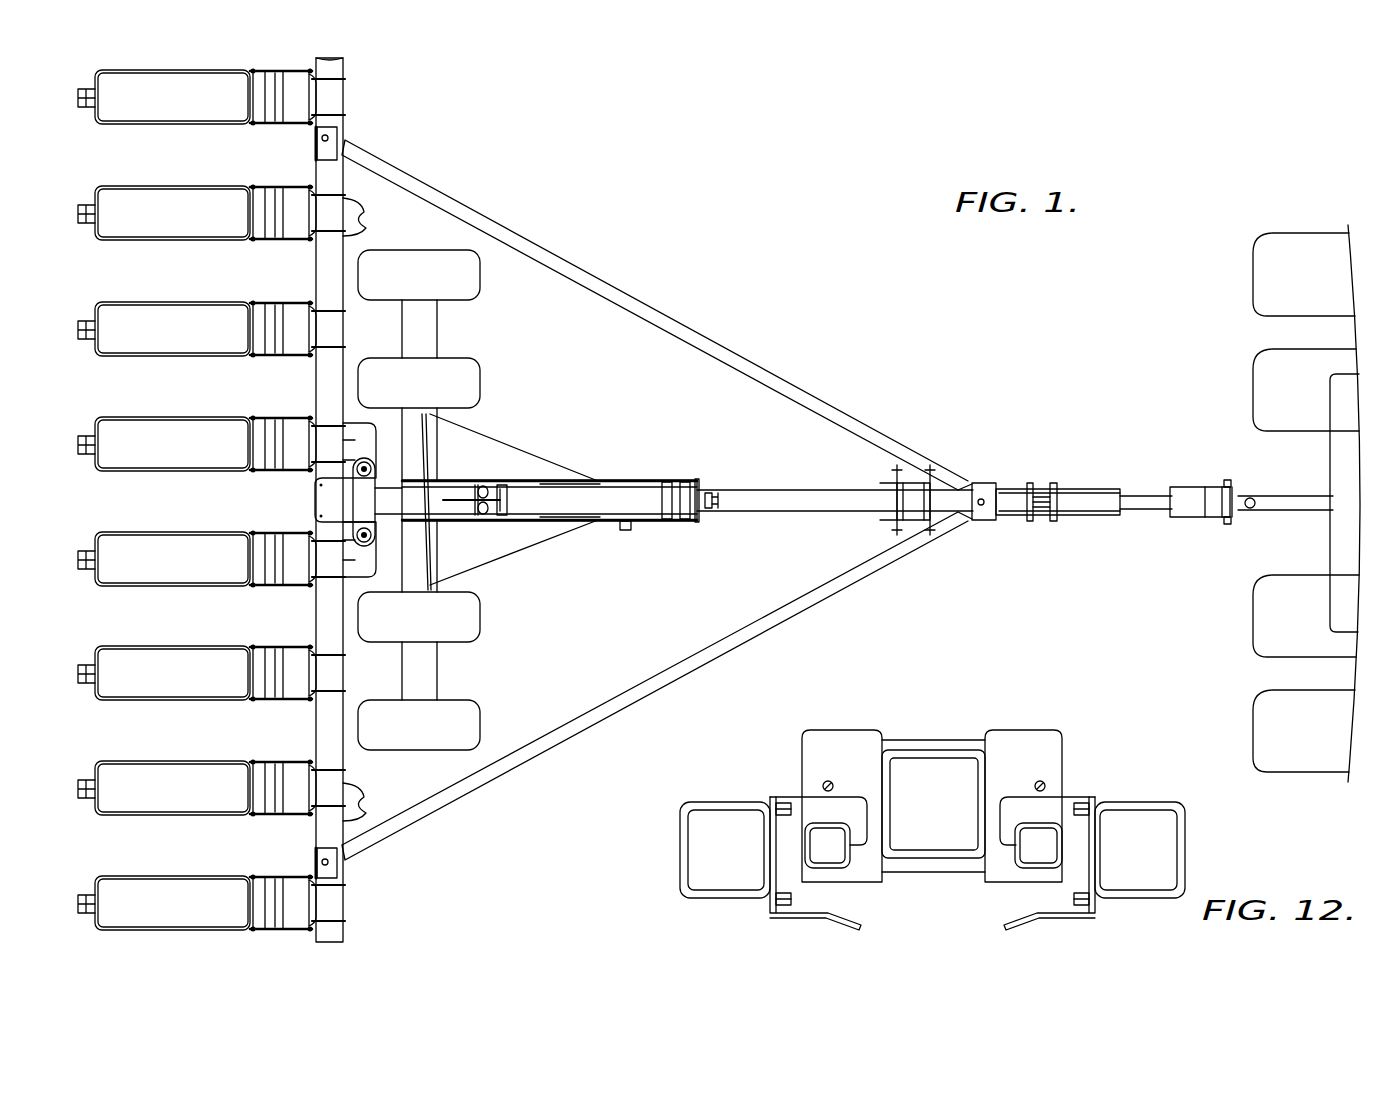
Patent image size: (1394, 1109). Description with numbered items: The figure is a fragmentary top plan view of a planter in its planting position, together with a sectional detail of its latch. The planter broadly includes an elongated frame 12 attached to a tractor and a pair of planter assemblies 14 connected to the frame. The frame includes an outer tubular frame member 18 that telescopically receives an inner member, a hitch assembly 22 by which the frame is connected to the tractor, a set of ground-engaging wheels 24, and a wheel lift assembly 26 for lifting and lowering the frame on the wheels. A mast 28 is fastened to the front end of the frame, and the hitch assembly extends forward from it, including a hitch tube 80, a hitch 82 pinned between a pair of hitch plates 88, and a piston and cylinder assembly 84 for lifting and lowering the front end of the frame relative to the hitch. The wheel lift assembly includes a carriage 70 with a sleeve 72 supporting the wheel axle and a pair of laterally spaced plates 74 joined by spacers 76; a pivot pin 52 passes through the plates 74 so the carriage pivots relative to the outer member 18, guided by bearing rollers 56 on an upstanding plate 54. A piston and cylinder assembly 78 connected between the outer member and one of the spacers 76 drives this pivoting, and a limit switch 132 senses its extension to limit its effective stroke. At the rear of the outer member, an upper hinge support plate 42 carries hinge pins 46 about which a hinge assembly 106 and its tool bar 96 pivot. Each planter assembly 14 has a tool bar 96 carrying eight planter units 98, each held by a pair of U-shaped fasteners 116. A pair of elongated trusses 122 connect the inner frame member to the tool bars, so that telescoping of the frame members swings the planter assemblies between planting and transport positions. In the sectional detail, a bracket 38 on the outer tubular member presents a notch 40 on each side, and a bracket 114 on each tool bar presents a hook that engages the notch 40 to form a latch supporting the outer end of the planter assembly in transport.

In FIG. 1, the frame 12 is at (545, 578).
In FIG. 1, the planter assemblies 14 is at (365, 110).
In FIG. 1, the outer tubular frame member 18 is at (635, 495).
In FIG. 12, the outer tubular frame member 18 is at (920, 758).
In FIG. 1, the hitch assembly 22 is at (1118, 520).
In FIG. 1, the ground-engaging wheels 24 is at (476, 272).
In FIG. 1, the wheel lift assembly 26 is at (690, 532).
In FIG. 1, the mast 28 is at (992, 530).
In FIG. 1, the bracket 38 is at (896, 528).
In FIG. 12, the bracket 38 is at (1072, 733).
In FIG. 12, the notch 40 is at (825, 820).
In FIG. 1, the upper hinge support plate 42 is at (322, 497).
In FIG. 1, the hinge pins 46 is at (370, 462).
In FIG. 1, the pivot pin 52 is at (626, 531).
In FIG. 1, the upstanding plate 54 is at (541, 484).
In FIG. 1, the bearing rollers 56 is at (494, 487).
In FIG. 1, the carriage 70 is at (498, 438).
In FIG. 1, the sleeve 72 is at (440, 576).
In FIG. 1, the carriage plates 74 is at (578, 478).
In FIG. 1, the spacers 76 is at (684, 486).
In FIG. 1, the piston and cylinder assembly 78 is at (795, 488).
In FIG. 1, the hitch tube 80 is at (1160, 498).
In FIG. 1, the hitch 82 is at (1245, 497).
In FIG. 1, the piston and cylinder assembly 84 is at (1100, 488).
In FIG. 1, the hitch plates 88 is at (1185, 520).
In FIG. 1, the tool bar 96 is at (322, 262).
In FIG. 12, the tool bar 96 is at (688, 830).
In FIG. 1, the planter units 98 is at (180, 128).
In FIG. 1, the hinge assembly 106 is at (352, 425).
In FIG. 12, the bracket 114 is at (845, 800).
In FIG. 1, the U-shaped fasteners 116 is at (366, 228).
In FIG. 1, the trusses 122 is at (650, 310).
In FIG. 1, the limit switch 132 is at (470, 485).